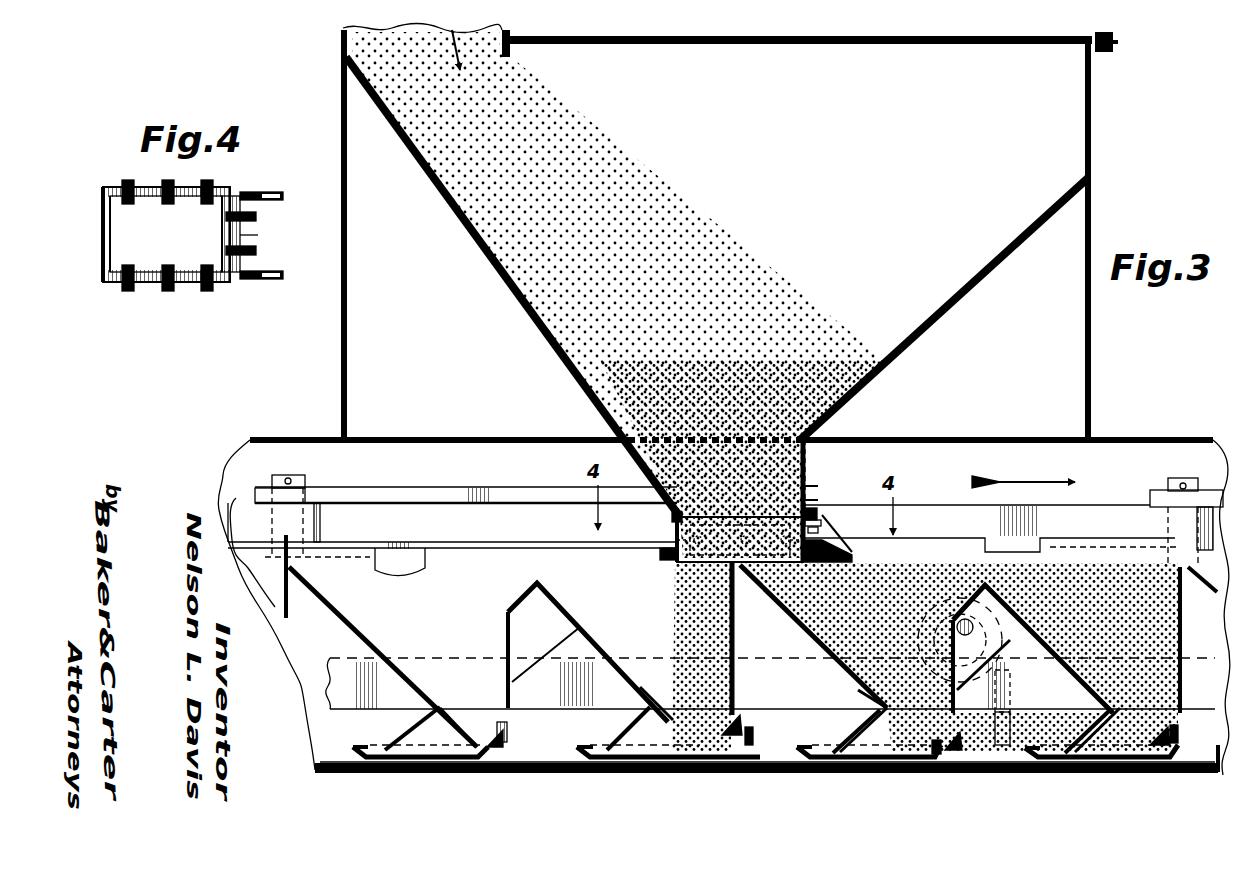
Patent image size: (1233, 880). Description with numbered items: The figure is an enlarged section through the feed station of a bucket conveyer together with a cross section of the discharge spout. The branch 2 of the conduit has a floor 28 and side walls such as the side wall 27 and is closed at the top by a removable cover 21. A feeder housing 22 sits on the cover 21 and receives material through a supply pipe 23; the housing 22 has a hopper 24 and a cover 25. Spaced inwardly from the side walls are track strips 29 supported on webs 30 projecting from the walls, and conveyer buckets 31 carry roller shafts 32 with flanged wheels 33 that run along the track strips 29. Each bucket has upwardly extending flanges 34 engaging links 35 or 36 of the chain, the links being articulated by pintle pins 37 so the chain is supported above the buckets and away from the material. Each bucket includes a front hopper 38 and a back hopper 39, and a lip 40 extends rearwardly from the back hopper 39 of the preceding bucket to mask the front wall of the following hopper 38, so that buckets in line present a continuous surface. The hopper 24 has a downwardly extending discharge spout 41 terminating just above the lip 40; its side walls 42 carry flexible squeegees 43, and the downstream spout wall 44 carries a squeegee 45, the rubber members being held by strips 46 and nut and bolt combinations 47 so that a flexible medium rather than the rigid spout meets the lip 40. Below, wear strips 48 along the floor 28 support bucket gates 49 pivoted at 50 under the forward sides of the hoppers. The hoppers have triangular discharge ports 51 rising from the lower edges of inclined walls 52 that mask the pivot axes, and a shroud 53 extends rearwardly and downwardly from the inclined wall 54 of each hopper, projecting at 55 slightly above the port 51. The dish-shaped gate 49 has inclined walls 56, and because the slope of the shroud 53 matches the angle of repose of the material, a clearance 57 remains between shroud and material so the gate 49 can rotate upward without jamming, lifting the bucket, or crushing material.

In FIG. 3, the branch 2 is at (1146, 436).
In FIG. 3, the removable cover 21 is at (1156, 440).
In FIG. 3, the feeder housing 22 is at (342, 352).
In FIG. 3, the supply pipe 23 is at (343, 35).
In FIG. 3, the hopper 24 is at (1008, 250).
In FIG. 3, the cover 25 is at (821, 46).
In FIG. 3, the side wall 27 is at (1108, 457).
In FIG. 3, the floor 28 is at (740, 775).
In FIG. 3, the track strips 29 is at (330, 686).
In FIG. 3, the webs 30 is at (1003, 746).
In FIG. 3, the conveyer buckets 31 is at (471, 563).
In FIG. 3, the roller shafts 32 is at (975, 630).
In FIG. 3, the flanged wheels 33 is at (980, 682).
In FIG. 3, the upwardly extending flanges 34 is at (246, 530).
In FIG. 3, the chain link 35 is at (447, 484).
In FIG. 3, the chain link 36 is at (242, 503).
In FIG. 3, the pintle pins 37 is at (290, 480).
In FIG. 3, the front hopper 38 is at (277, 598).
In FIG. 3, the back hopper 39 is at (397, 635).
In FIG. 3, the lip 40 is at (318, 532).
In FIG. 3, the discharge spout 41 is at (808, 476).
In FIG. 4, the discharge spout 41 is at (103, 240).
In FIG. 3, the spout side walls 42 is at (682, 563).
In FIG. 4, the spout side walls 42 is at (152, 198).
In FIG. 3, the squeegees 43 is at (672, 560).
In FIG. 4, the squeegees 43 is at (262, 187).
In FIG. 3, the downstream spout wall 44 is at (810, 490).
In FIG. 4, the downstream spout wall 44 is at (232, 235).
In FIG. 3, the squeegee 45 is at (810, 502).
In FIG. 4, the squeegee 45 is at (258, 236).
In FIG. 3, the strips 46 is at (673, 518).
In FIG. 4, the strips 46 is at (112, 190).
In FIG. 3, the nut and bolt combinations 47 is at (822, 515).
In FIG. 4, the nut and bolt combinations 47 is at (207, 180).
In FIG. 3, the wear strips 48 is at (530, 745).
In FIG. 3, the bucket gates 49 is at (405, 762).
In FIG. 3, the pivot 50 is at (508, 735).
In FIG. 3, the discharge ports 51 is at (460, 722).
In FIG. 3, the inclined walls 52 is at (496, 732).
In FIG. 3, the shroud 53 is at (398, 720).
In FIG. 3, the inclined wall 54 is at (338, 620).
In FIG. 3, the shroud projection 55 is at (428, 707).
In FIG. 3, the inclined gate walls 56 is at (355, 752).
In FIG. 3, the clearance 57 is at (860, 715).